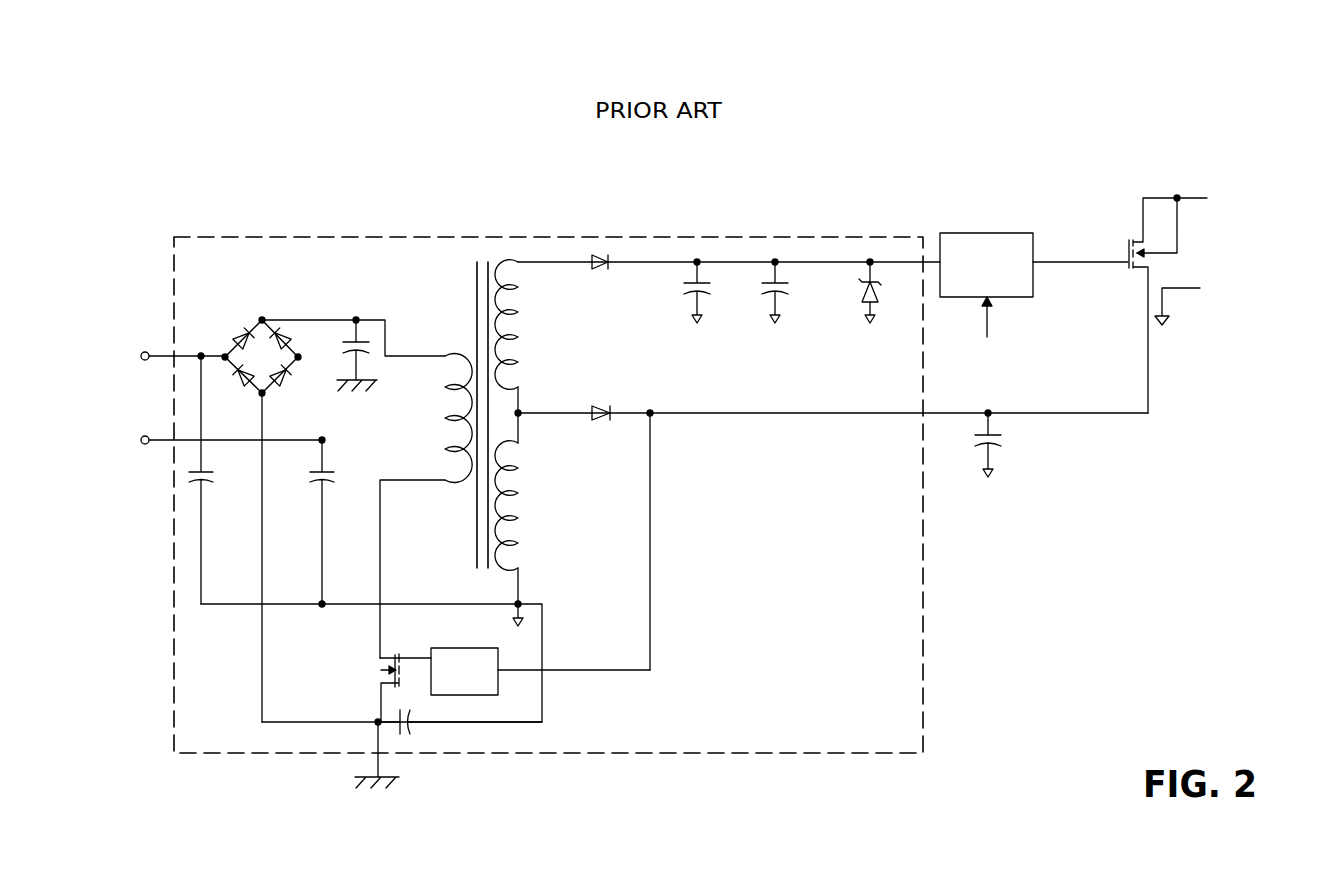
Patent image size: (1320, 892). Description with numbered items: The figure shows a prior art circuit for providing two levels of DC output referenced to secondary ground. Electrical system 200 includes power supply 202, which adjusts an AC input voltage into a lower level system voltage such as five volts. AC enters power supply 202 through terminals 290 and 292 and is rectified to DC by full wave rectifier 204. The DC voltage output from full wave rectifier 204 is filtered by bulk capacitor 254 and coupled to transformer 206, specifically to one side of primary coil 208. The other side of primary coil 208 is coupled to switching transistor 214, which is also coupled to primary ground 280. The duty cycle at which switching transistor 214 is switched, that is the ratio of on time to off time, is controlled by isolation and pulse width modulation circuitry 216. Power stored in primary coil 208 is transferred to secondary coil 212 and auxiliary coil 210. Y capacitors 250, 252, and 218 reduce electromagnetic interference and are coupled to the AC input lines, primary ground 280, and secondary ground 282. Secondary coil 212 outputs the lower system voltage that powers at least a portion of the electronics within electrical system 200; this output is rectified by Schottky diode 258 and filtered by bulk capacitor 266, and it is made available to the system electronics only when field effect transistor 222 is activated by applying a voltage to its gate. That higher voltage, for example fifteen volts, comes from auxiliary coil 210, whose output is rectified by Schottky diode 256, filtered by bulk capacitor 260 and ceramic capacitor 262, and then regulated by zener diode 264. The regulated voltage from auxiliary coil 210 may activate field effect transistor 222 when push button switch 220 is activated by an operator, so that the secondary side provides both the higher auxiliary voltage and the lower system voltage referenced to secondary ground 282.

The electrical system 200 is at (146, 92).
The power supply 202 is at (213, 236).
The full wave rectifier 204 is at (264, 318).
The transformer 206 is at (474, 323).
The primary coil 208 is at (450, 406).
The auxiliary coil 210 is at (514, 292).
The secondary coil 212 is at (514, 494).
The switching transistor 214 is at (396, 660).
The isolation and pulse width modulation circuitry 216 is at (524, 671).
The Y capacitor 218 is at (412, 729).
The push button switch 220 is at (1034, 297).
The field effect transistor 222 is at (1127, 246).
The Y capacitor 250 is at (205, 483).
The Y capacitor 252 is at (320, 483).
The bulk capacitor 254 is at (352, 345).
The Schottky diode 256 is at (597, 273).
The Schottky diode 258 is at (599, 421).
The bulk capacitor 260 is at (690, 303).
The ceramic capacitor 262 is at (768, 303).
The zener diode 264 is at (863, 306).
The bulk capacitor 266 is at (983, 449).
The primary ground 280 is at (361, 382).
The secondary ground 282 is at (516, 625).
The terminal 290 is at (141, 362).
The terminal 292 is at (141, 446).